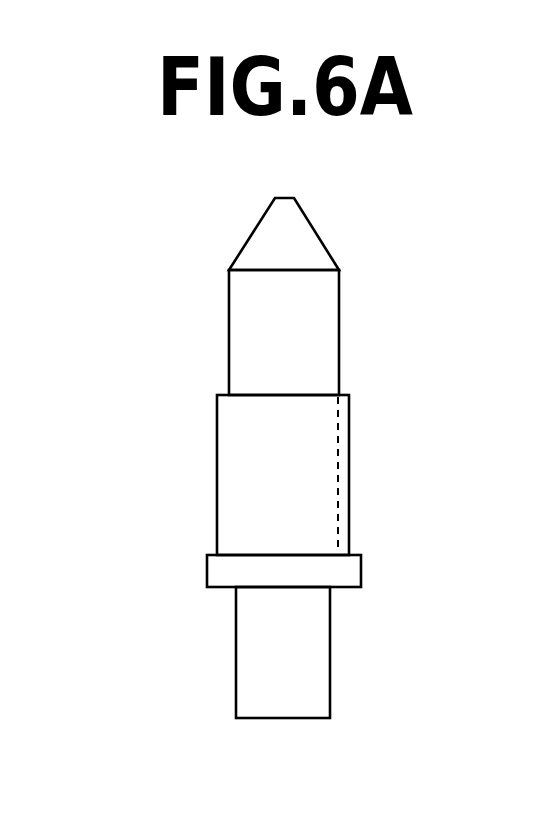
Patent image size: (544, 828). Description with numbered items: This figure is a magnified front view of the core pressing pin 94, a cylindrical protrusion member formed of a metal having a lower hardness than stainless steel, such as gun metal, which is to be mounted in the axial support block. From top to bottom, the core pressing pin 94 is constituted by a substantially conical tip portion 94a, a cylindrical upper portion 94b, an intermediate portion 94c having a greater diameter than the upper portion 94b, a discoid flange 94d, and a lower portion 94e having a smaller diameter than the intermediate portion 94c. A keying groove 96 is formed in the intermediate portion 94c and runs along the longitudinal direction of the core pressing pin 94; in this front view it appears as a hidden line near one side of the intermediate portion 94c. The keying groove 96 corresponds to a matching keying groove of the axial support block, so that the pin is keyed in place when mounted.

The core pressing pin 94 is at (352, 251).
The tip portion 94a is at (265, 242).
The upper portion 94b is at (228, 343).
The intermediate portion 94c is at (217, 487).
The flange 94d is at (207, 570).
The lower portion 94e is at (235, 672).
The keying groove 96 is at (338, 478).